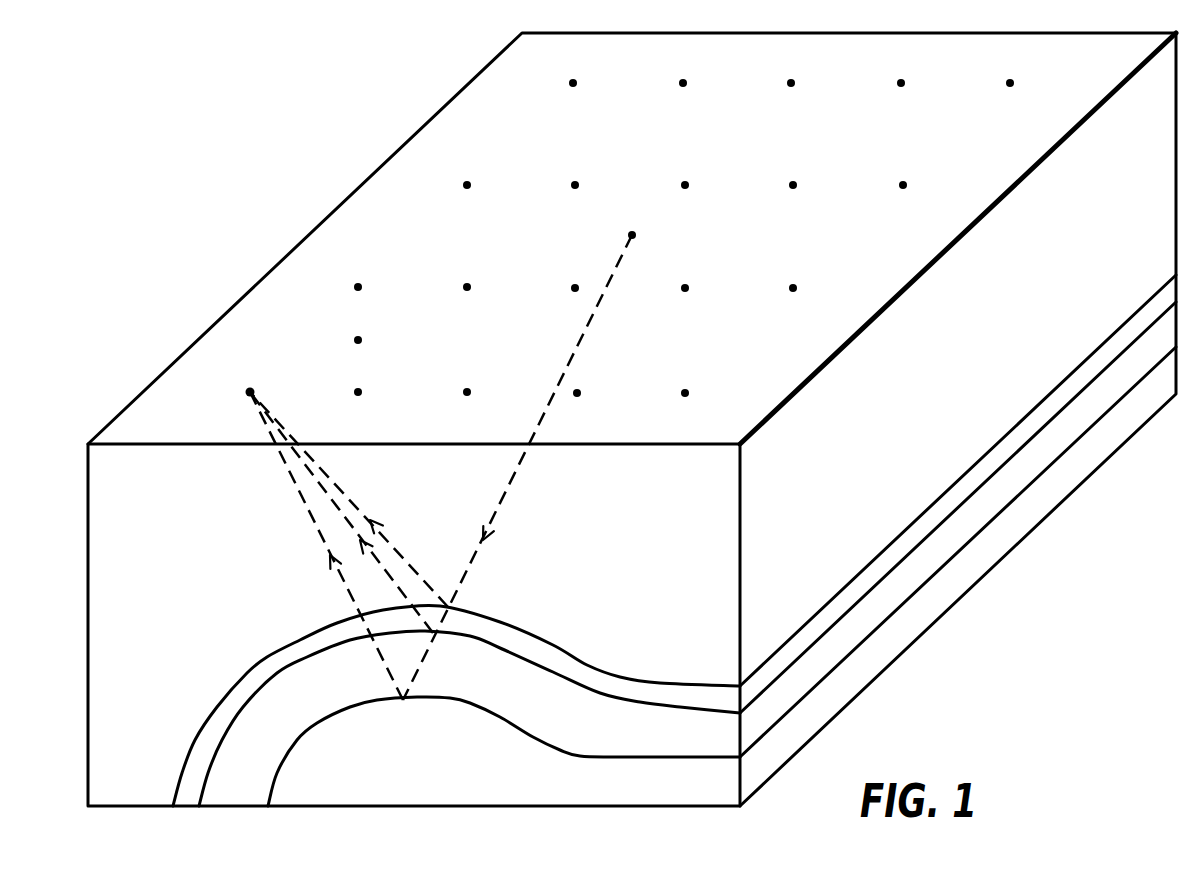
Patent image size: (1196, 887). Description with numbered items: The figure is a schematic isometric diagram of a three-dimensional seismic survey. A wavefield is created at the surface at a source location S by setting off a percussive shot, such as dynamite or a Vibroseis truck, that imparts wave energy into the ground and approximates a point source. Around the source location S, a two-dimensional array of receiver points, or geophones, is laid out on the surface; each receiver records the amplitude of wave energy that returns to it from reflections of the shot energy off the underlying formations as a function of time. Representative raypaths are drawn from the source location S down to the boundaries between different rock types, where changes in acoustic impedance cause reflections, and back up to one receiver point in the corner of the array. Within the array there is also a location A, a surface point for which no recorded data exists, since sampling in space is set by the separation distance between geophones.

The location A is at (366, 326).
The source location S is at (637, 222).